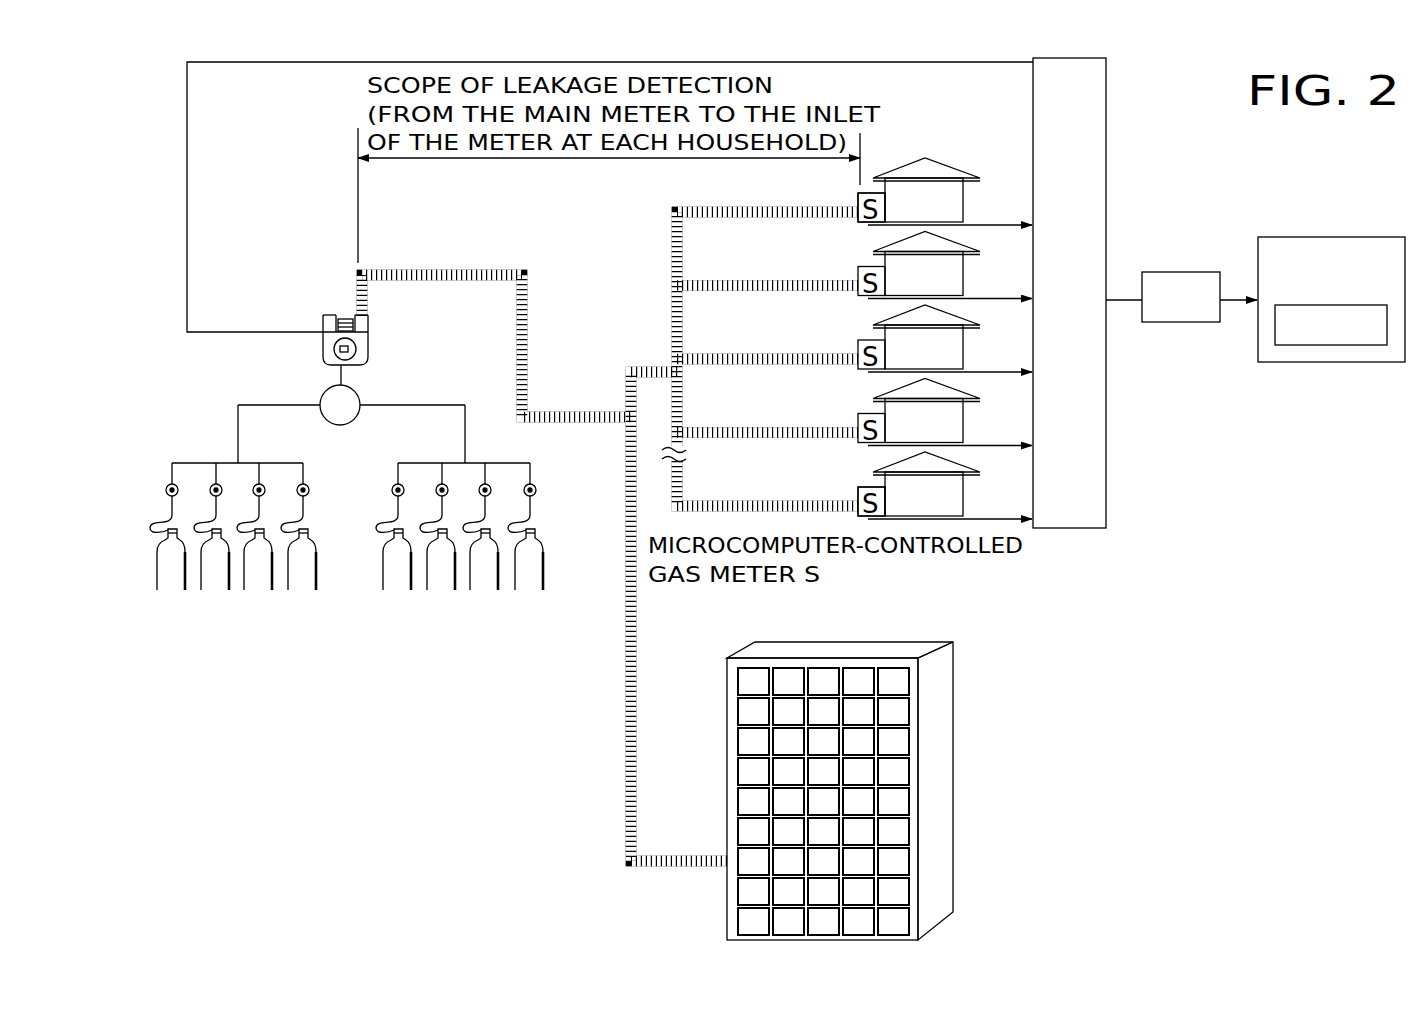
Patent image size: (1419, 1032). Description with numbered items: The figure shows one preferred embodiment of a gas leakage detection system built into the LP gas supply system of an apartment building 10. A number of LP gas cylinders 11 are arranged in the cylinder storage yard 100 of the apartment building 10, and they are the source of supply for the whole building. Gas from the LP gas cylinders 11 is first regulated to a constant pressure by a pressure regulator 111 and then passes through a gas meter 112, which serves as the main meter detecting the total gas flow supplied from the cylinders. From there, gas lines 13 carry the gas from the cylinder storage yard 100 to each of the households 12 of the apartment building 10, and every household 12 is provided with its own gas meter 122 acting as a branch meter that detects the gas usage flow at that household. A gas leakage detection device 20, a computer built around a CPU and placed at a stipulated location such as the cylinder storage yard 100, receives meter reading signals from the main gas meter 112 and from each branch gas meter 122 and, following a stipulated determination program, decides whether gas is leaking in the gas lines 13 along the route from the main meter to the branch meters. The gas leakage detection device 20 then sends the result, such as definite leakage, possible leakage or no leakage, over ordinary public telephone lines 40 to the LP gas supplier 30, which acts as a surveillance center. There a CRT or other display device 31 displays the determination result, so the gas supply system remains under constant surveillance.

The cylinder storage yard 100 is at (346, 515).
The LP gas cylinders 11 is at (220, 580).
The pressure regulator 111 is at (320, 397).
The gas meter 112 is at (368, 348).
The gas lines 13 is at (452, 268).
The households 12 is at (886, 531).
The gas meter 122 is at (862, 223).
The apartment building 10 is at (953, 703).
The gas leakage detection device 20 is at (1106, 418).
The public lines 40 is at (1178, 268).
The LP gas supplier 30 is at (1331, 303).
The display device 31 is at (1347, 335).